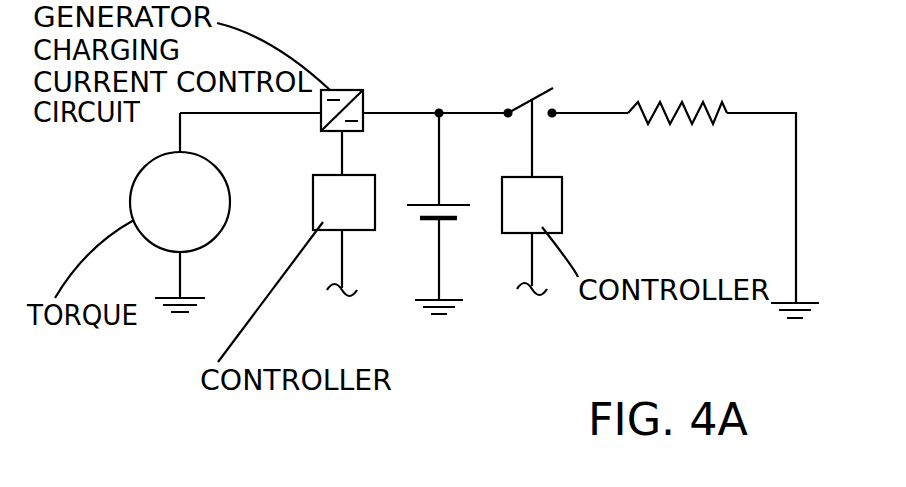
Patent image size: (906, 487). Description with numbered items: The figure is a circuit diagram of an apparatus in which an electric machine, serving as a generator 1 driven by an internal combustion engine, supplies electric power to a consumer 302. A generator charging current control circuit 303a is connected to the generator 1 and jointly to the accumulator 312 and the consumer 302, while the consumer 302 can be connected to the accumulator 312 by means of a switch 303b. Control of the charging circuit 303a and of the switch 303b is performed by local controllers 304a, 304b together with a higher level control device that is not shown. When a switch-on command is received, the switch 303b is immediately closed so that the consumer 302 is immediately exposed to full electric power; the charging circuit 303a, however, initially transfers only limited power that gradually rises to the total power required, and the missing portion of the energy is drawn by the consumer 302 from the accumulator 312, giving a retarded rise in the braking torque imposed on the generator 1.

The generator 1 is at (202, 250).
The consumer 302 is at (668, 107).
The generator charging current control circuit 303a is at (348, 90).
The switch 303b is at (522, 102).
The local controller 304a is at (360, 232).
The local controller 304b is at (562, 217).
The accumulator 312 is at (458, 210).